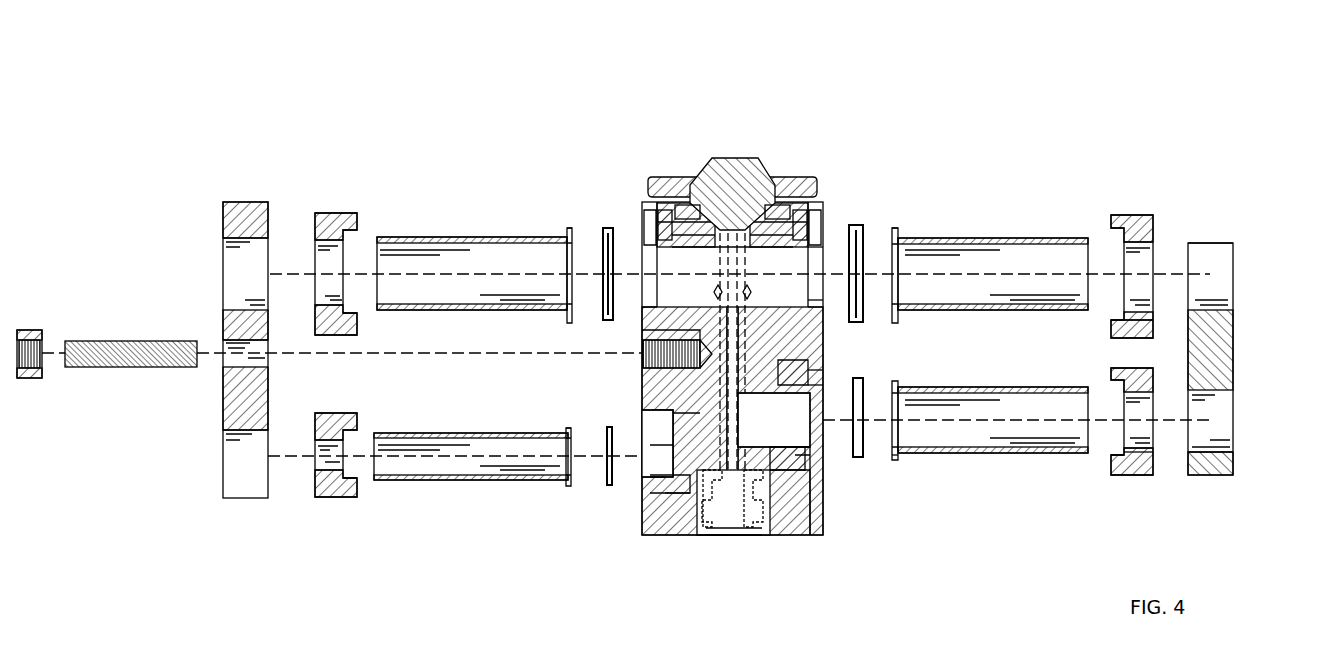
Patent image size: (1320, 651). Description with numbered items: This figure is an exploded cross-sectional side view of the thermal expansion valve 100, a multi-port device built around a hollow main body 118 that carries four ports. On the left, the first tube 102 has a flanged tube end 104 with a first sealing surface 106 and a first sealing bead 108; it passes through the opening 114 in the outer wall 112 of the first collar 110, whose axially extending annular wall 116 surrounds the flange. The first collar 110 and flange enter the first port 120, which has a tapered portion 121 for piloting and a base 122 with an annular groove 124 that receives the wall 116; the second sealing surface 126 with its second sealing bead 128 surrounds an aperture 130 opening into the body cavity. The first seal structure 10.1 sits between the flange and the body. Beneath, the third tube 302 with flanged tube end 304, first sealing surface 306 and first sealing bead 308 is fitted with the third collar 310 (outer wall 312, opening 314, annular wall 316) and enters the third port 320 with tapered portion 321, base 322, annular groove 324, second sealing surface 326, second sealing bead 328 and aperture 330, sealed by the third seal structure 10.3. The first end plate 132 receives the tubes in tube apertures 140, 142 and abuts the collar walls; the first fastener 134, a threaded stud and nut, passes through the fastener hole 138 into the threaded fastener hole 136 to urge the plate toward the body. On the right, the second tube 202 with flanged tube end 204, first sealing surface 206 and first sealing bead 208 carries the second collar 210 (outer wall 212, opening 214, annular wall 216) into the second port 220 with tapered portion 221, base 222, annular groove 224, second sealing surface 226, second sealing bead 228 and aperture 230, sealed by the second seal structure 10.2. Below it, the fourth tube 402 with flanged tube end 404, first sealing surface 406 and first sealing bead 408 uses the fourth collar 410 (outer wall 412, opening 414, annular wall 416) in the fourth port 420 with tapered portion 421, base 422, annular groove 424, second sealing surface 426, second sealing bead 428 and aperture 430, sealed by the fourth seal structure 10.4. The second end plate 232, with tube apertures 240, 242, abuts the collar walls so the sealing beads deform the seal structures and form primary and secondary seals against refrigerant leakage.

The thermal expansion valve 100 is at (872, 88).
The first tube 102 is at (450, 236).
The flanged tube end 104 is at (567, 240).
The first sealing surface 106 is at (572, 290).
The first sealing bead 108 is at (572, 230).
The first seal structure 10.1 is at (606, 240).
The second seal structure 10.2 is at (858, 240).
The third seal structure 10.3 is at (608, 478).
The fourth seal structure 10.4 is at (860, 455).
The first collar 110 is at (335, 213).
The outer wall 112 is at (317, 236).
The opening 114 is at (318, 310).
The axially extending annular wall 116 is at (355, 330).
The hollow main body 118 is at (735, 522).
The first port 120 is at (650, 335).
The tapered portion 121 is at (643, 355).
The base 122 is at (648, 318).
The annular groove 124 is at (710, 175).
The second sealing surface 126 is at (660, 215).
The second sealing bead 128 is at (680, 212).
The aperture 130 is at (645, 215).
The first end plate 132 is at (222, 205).
The first fastener 134 is at (30, 330).
The threaded fastener hole 136 is at (718, 290).
The fastener hole 138 is at (224, 343).
The tube aperture 140 is at (226, 248).
The tube aperture 142 is at (226, 440).
The second tube 202 is at (1030, 237).
The flanged tube end 204 is at (896, 232).
The first sealing surface 206 is at (897, 275).
The first sealing bead 208 is at (896, 230).
The second collar 210 is at (1135, 214).
The outer wall 212 is at (1152, 225).
The opening 214 is at (1135, 322).
The axially extending annular wall 216 is at (1125, 335).
The second port 220 is at (855, 315).
The tapered portion 221 is at (822, 330).
The base 222 is at (748, 290).
The annular groove 224 is at (760, 180).
The second sealing surface 226 is at (810, 215).
The second sealing bead 228 is at (795, 212).
The aperture 230 is at (822, 215).
The second end plate 232 is at (1235, 330).
The tube aperture 240 is at (1215, 243).
The tube aperture 242 is at (1230, 455).
The third tube 302 is at (437, 481).
The flanged tube end 304 is at (565, 470).
The first sealing surface 306 is at (570, 486).
The first sealing bead 308 is at (565, 433).
The third collar 310 is at (330, 497).
The outer wall 312 is at (318, 430).
The opening 314 is at (318, 490).
The axially extending annular wall 316 is at (352, 490).
The third port 320 is at (655, 430).
The tapered portion 321 is at (660, 423).
The base 322 is at (652, 438).
The annular groove 324 is at (700, 536).
The second sealing surface 326 is at (675, 500).
The second sealing bead 328 is at (660, 448).
The aperture 330 is at (655, 478).
The fourth tube 402 is at (960, 454).
The flanged tube end 404 is at (895, 445).
The first sealing surface 406 is at (895, 410).
The first sealing bead 408 is at (896, 462).
The fourth collar 410 is at (1135, 476).
The outer wall 412 is at (1155, 472).
The opening 414 is at (1130, 452).
The axially extending annular wall 416 is at (1122, 470).
The fourth port 420 is at (826, 385).
The tapered portion 421 is at (826, 372).
The base 422 is at (805, 470).
The annular groove 424 is at (790, 480).
The second sealing surface 426 is at (800, 452).
The second sealing bead 428 is at (798, 420).
The aperture 430 is at (830, 450).